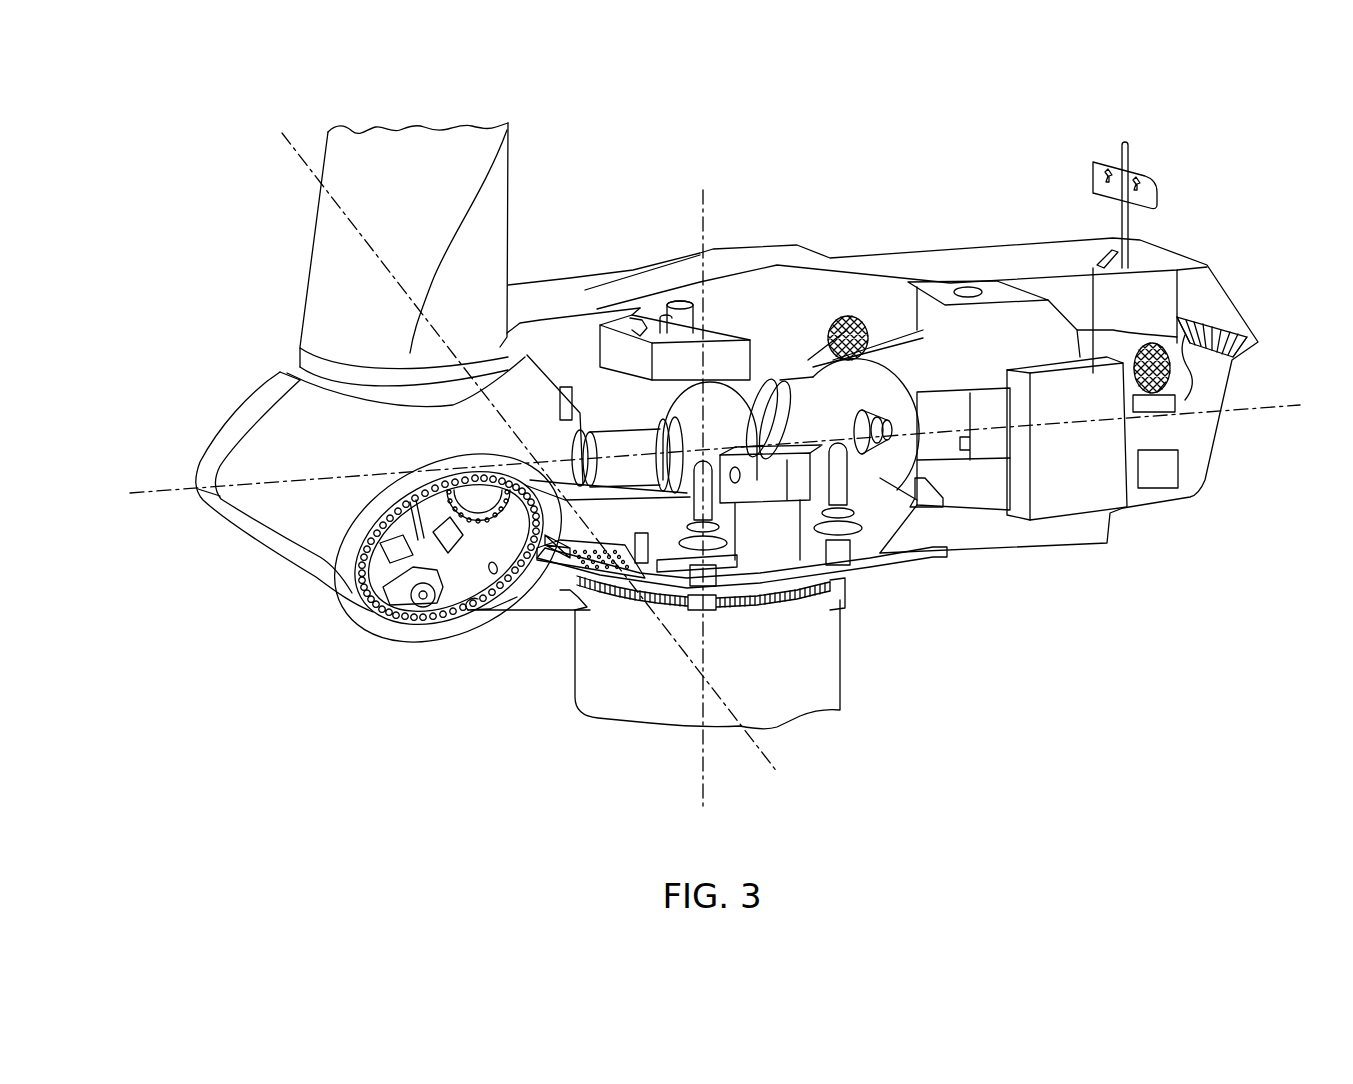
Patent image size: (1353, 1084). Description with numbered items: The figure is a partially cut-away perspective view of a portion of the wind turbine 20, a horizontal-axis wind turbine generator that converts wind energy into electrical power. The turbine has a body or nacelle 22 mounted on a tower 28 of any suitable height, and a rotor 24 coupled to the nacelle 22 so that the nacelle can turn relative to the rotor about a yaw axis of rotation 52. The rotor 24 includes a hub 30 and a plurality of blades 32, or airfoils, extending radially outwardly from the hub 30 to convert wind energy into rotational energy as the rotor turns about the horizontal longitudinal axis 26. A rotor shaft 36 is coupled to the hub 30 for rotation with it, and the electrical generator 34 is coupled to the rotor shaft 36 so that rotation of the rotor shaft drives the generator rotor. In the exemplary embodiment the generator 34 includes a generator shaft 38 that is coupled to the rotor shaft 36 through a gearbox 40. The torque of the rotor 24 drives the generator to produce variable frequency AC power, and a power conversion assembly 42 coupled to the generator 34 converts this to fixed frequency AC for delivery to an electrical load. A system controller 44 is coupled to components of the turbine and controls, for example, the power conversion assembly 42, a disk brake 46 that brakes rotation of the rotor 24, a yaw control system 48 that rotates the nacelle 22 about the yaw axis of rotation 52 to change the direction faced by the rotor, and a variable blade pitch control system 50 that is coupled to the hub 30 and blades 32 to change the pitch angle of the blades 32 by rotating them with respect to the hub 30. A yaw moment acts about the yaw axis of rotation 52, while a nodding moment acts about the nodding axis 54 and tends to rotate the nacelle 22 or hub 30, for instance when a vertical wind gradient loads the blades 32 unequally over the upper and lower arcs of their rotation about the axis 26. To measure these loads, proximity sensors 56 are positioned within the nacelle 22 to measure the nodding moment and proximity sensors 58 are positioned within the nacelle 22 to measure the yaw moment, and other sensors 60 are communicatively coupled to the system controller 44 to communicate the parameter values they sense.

The wind turbine 20 is at (232, 133).
The nacelle 22 is at (527, 291).
The rotor 24 is at (205, 419).
The horizontal longitudinal axis 26 is at (135, 508).
The tower 28 is at (832, 690).
The hub 30 is at (274, 510).
The blades 32 is at (312, 283).
The electrical generator 34 is at (931, 458).
The rotor shaft 36 is at (598, 442).
The generator shaft 38 is at (880, 447).
The gearbox 40 is at (754, 387).
The power conversion assembly 42 is at (808, 392).
The system controller 44 is at (1080, 493).
The disk brake 46 is at (776, 388).
The yaw control system 48 is at (679, 612).
The variable blade pitch control system 50 is at (399, 603).
The yaw axis of rotation 52 is at (697, 193).
The nodding axis 54 is at (897, 410).
The proximity sensors 56 is at (563, 385).
The proximity sensors 58 is at (607, 578).
The other sensors 60 is at (1157, 490).